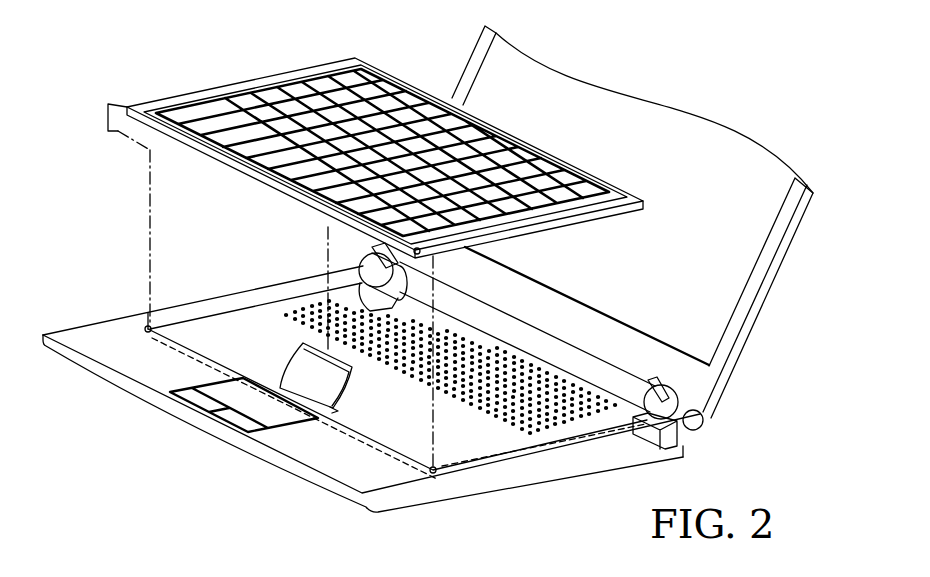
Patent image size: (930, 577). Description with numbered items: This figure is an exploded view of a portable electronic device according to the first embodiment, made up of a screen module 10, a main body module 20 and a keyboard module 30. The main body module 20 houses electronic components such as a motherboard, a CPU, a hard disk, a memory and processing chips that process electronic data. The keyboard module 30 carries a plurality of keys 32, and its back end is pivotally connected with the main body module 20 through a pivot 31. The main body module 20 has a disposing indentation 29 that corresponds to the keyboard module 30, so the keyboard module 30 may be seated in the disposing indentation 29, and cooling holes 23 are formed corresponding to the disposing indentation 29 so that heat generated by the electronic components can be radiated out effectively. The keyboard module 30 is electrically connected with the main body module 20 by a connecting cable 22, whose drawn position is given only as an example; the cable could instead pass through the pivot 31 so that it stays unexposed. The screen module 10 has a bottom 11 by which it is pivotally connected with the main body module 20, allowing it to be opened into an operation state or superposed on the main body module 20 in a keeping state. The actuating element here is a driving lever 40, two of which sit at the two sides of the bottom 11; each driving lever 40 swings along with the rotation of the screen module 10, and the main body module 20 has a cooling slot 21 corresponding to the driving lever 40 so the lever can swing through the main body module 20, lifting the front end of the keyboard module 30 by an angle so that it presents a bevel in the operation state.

The screen module 10 is at (803, 202).
The bottom 11 is at (703, 426).
The main body module 20 is at (80, 335).
The cooling slot 21 is at (688, 462).
The connecting cable 22 is at (283, 380).
The cooling holes 23 is at (562, 425).
The disposing indentation 29 is at (215, 310).
The keyboard module 30 is at (383, 137).
The pivot 31 is at (128, 109).
The keys 32 is at (212, 98).
The driving lever 40 is at (668, 387).